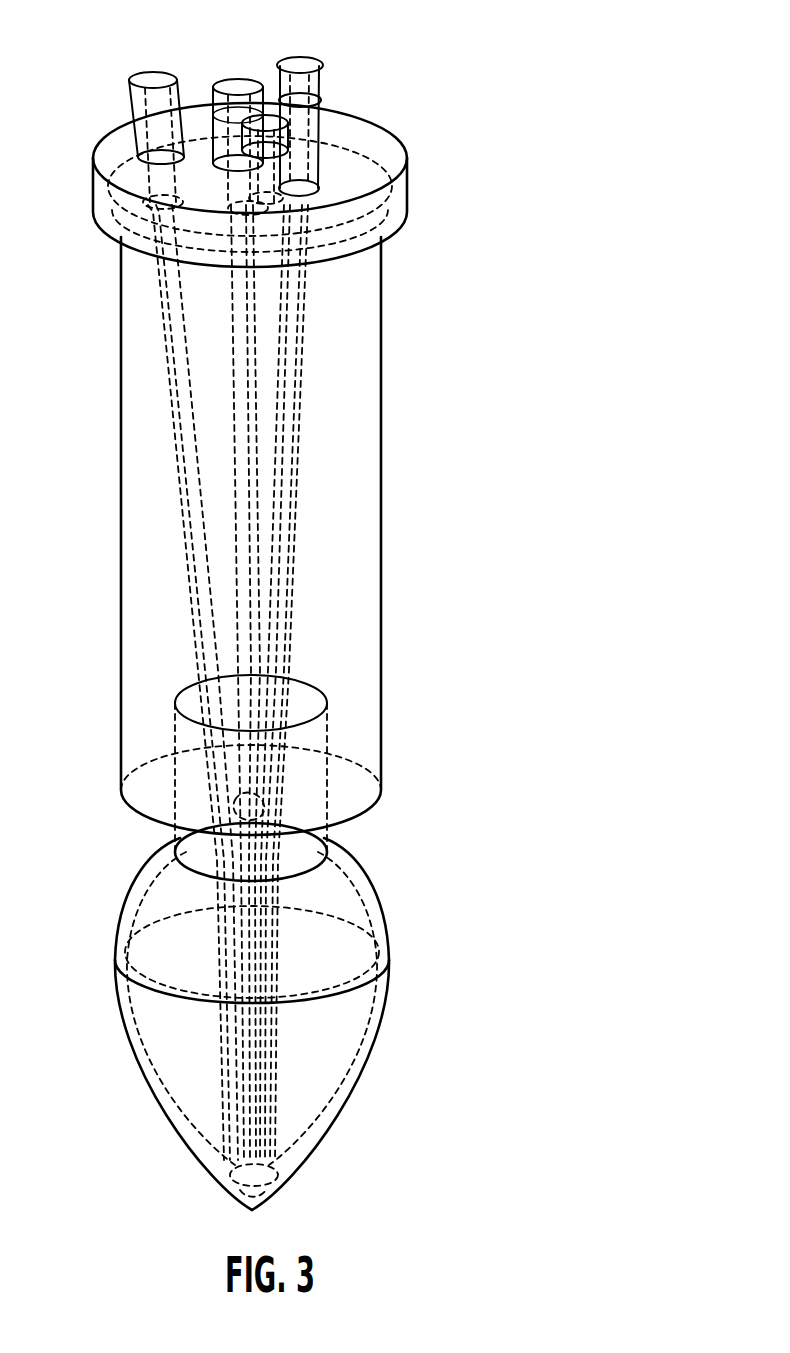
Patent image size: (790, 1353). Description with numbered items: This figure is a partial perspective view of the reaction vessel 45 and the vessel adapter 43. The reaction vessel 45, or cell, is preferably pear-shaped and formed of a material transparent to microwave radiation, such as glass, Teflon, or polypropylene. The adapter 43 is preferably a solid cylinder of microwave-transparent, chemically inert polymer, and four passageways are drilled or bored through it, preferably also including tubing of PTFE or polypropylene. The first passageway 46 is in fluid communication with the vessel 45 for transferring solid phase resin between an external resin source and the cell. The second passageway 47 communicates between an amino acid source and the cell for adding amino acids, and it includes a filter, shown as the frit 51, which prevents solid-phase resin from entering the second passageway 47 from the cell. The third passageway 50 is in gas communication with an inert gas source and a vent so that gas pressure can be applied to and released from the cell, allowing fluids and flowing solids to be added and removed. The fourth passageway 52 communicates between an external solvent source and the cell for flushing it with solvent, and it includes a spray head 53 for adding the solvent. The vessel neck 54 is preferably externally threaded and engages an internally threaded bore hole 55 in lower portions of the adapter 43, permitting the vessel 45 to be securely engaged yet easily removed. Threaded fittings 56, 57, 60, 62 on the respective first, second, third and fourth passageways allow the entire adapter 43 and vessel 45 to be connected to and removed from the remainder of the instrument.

The vessel adapter 43 is at (372, 570).
The reaction vessel 45 is at (388, 1013).
The first passageway 46 is at (295, 357).
The second passageway 47 is at (182, 360).
The third passageway 50 is at (267, 297).
The frit 51 is at (284, 1170).
The fourth passageway 52 is at (233, 485).
The spray head 53 is at (250, 807).
The vessel neck 54 is at (177, 860).
The internally threaded bore hole 55 is at (177, 743).
The threaded fitting 56 is at (322, 74).
The threaded fitting 57 is at (137, 87).
The threaded fitting 60 is at (267, 120).
The threaded fitting 62 is at (218, 80).